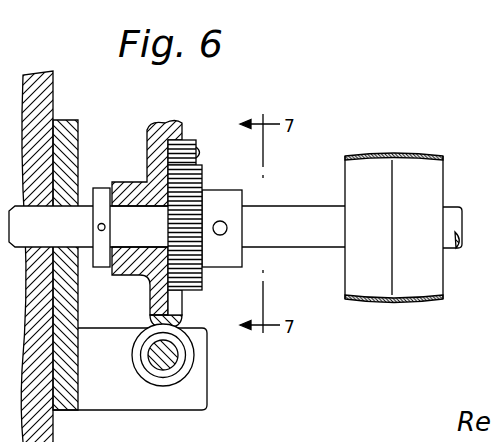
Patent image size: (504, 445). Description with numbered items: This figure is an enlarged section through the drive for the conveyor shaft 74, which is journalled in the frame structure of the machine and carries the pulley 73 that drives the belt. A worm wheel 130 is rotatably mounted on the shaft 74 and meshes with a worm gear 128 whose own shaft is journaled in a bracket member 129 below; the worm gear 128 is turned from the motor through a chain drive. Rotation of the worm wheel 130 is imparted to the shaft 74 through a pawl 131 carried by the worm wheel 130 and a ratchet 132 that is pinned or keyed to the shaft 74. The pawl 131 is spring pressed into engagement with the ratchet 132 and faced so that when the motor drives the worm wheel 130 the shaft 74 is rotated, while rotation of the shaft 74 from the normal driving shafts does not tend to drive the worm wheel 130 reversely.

The pulley 73 is at (392, 153).
The shaft 74 is at (311, 210).
The worm gear 128 is at (163, 382).
The bracket member 129 is at (92, 400).
The worm wheel 130 is at (147, 140).
The pawl 131 is at (190, 157).
The ratchet 132 is at (203, 171).